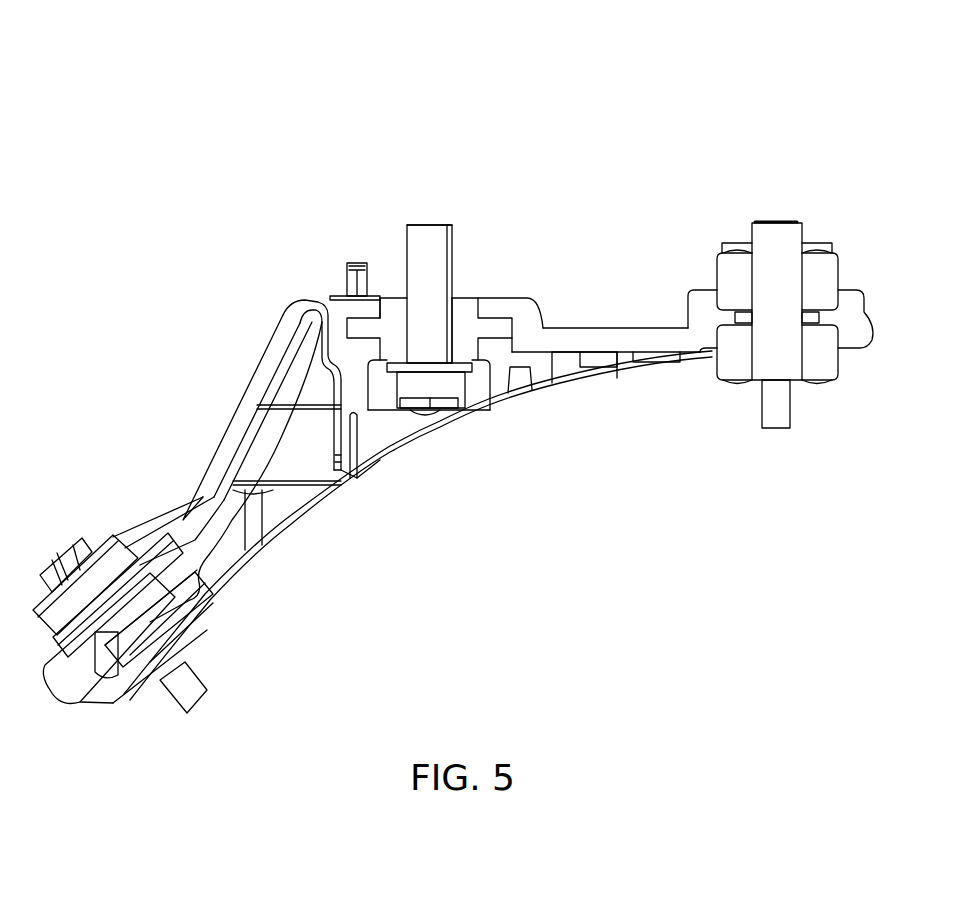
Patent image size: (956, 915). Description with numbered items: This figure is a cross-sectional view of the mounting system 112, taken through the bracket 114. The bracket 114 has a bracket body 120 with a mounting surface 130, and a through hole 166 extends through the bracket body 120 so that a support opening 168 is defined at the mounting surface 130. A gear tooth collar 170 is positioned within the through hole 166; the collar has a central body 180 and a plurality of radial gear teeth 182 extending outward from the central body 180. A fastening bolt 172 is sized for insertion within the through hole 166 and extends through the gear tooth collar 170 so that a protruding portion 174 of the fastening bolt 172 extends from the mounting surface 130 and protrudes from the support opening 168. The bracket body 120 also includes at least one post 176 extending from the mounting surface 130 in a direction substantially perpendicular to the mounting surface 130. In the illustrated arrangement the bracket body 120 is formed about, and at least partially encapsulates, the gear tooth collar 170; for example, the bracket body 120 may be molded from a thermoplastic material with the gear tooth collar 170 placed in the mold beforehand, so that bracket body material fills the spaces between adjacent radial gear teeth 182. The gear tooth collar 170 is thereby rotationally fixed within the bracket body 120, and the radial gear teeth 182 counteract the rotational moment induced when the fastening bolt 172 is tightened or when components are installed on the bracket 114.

The vehicle component assembly 112 is at (808, 78).
The bracket 114 is at (184, 215).
The bracket body 120 is at (613, 327).
The mounting surface 130 is at (517, 300).
The through hole 166 is at (478, 278).
The support opening 168 is at (387, 294).
The gear tooth collar 170 is at (465, 298).
The fastening bolt 172 is at (465, 388).
The protruding portion 174 is at (405, 228).
The post 176 is at (342, 270).
The central body 180 is at (385, 365).
The radial gear teeth 182 is at (360, 313).